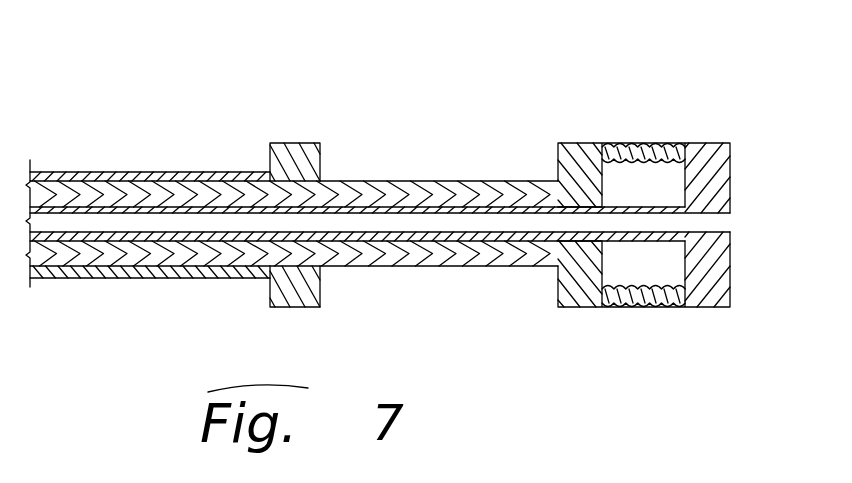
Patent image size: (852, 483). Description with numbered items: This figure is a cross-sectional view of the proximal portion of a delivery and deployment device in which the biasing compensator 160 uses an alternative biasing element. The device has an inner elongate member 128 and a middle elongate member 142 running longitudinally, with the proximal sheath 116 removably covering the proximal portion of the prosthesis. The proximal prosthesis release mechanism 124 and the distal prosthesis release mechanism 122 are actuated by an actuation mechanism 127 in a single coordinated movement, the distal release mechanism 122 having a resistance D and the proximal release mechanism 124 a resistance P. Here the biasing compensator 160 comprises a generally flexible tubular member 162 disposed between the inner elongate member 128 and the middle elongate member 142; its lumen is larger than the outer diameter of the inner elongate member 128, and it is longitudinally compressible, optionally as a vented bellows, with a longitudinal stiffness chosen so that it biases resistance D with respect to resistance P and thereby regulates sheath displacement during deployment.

The proximal sheath 116 is at (145, 180).
The proximal prosthesis release mechanism 124 is at (300, 134).
The middle elongate member 142 is at (375, 187).
The actuation mechanism 127 is at (594, 79).
The biasing compensator 160 is at (632, 143).
The distal prosthesis release mechanism 122 is at (725, 130).
The inner elongate member 128 is at (528, 238).
The flexible tubular member 162 is at (668, 297).